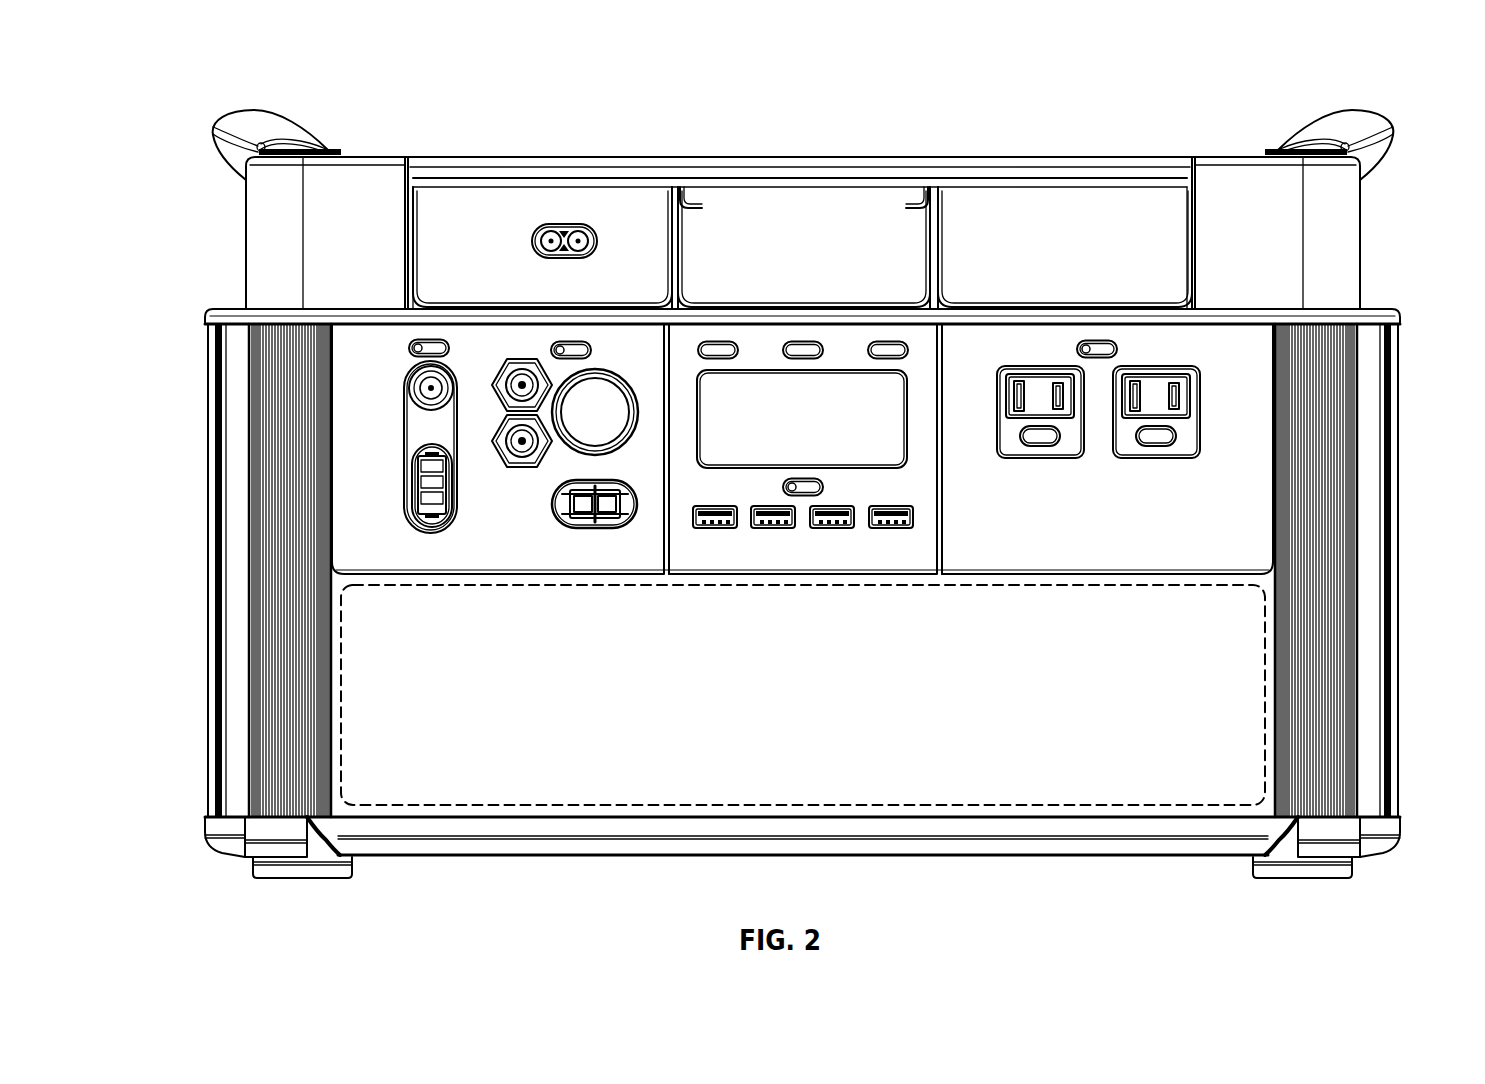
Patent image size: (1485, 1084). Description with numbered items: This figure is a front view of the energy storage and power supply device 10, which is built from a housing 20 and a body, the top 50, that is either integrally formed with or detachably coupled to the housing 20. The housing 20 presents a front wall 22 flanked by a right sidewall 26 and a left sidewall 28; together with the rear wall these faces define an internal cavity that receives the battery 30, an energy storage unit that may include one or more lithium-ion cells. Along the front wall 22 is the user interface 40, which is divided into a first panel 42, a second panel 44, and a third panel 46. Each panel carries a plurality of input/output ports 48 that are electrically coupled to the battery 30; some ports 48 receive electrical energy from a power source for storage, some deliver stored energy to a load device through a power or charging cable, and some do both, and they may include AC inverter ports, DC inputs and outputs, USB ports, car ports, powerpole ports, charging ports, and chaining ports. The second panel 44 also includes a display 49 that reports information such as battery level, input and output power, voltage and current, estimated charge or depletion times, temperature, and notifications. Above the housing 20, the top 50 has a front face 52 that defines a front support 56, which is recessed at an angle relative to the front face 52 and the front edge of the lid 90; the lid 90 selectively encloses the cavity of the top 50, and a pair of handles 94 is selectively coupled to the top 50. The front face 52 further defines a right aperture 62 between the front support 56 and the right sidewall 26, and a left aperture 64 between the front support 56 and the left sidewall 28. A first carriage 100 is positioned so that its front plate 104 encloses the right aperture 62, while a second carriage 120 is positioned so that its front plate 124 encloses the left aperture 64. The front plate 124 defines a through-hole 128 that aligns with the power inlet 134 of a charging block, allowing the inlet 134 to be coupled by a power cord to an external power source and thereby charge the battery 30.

The energy storage and power supply device 10 is at (160, 82).
The housing 20 is at (196, 740).
The front wall 22 is at (675, 790).
The right sidewall 26 is at (1401, 527).
The left sidewall 28 is at (206, 505).
The battery 30 is at (455, 805).
The user interface 40 is at (831, 604).
The first panel 42 is at (1125, 551).
The second panel 44 is at (711, 551).
The third panel 46 is at (463, 548).
The input/output ports 48 is at (405, 440).
The display 49 is at (912, 425).
The top 50 is at (238, 232).
The front face 52 is at (373, 182).
The front support 56 is at (768, 205).
The right aperture 62 is at (1200, 260).
The left aperture 64 is at (407, 262).
The lid 90 is at (468, 172).
The handles 94 is at (247, 118).
The first carriage 100 is at (1140, 210).
The front plate 104 is at (998, 205).
The second carriage 120 is at (640, 208).
The front plate 124 is at (562, 210).
The through-hole 128 is at (556, 258).
The power inlet 134 is at (590, 243).